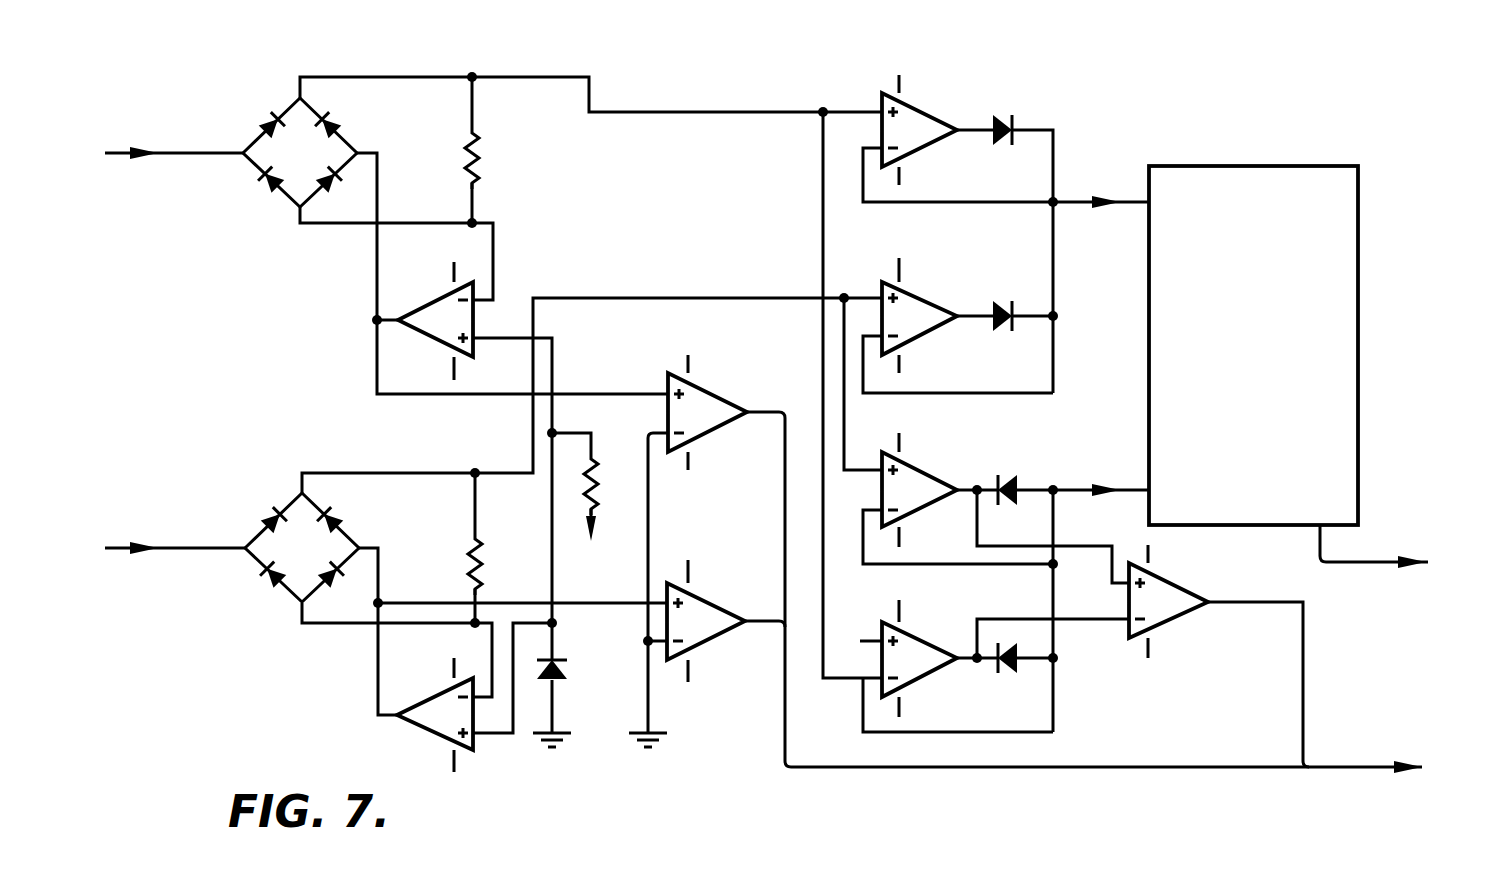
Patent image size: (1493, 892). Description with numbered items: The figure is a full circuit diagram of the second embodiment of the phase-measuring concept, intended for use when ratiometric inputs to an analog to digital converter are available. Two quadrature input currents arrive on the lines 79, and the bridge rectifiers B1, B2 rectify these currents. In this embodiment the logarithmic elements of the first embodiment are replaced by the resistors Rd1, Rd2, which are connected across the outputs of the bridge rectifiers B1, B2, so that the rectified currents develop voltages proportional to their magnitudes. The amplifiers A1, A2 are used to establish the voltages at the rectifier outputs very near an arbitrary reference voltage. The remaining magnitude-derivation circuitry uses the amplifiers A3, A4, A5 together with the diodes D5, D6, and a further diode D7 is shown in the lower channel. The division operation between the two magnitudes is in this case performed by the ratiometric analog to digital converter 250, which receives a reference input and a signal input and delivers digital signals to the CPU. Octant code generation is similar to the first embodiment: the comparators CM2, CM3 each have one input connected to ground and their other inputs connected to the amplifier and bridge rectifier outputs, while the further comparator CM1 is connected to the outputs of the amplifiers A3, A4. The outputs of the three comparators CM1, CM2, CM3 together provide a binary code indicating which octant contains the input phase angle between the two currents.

The lines 79 is at (188, 153).
The analog to digital converter 250 is at (1340, 394).
The bridge rectifier B1 is at (300, 152).
The bridge rectifier B2 is at (302, 547).
The resistor Rd1 is at (495, 150).
The resistor Rd2 is at (497, 548).
The amplifier A1 is at (435, 321).
The amplifier A2 is at (677, 423).
The amplifier A3 is at (919, 315).
The amplifier A4 is at (919, 490).
The amplifier A5 is at (908, 658).
The comparator CM1 is at (1177, 601).
The comparator CM2 is at (712, 412).
The comparator CM3 is at (709, 621).
The diode D5 is at (1014, 476).
The diode D6 is at (1014, 675).
The diode D7 is at (562, 696).